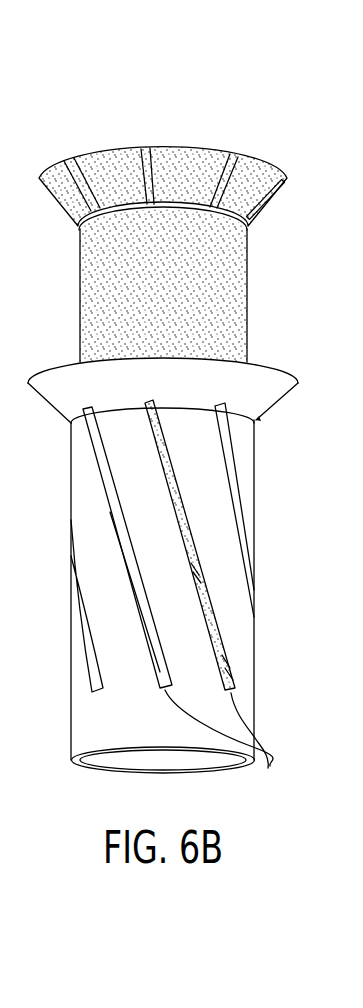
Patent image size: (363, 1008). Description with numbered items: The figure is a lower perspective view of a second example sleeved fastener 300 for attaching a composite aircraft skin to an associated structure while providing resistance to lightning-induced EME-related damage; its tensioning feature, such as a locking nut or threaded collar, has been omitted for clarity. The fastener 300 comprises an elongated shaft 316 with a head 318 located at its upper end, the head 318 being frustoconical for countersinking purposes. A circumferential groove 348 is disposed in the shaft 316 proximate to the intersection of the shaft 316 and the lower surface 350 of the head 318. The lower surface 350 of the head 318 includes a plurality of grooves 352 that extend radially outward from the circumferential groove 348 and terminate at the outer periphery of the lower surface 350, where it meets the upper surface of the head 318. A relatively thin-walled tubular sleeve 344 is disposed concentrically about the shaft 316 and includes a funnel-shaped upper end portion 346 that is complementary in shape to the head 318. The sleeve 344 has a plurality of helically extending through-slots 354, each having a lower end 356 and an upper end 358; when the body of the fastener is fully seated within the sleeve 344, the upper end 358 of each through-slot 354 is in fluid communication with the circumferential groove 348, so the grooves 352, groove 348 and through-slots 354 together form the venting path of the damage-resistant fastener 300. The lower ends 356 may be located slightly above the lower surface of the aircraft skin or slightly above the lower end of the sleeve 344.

The sleeved fastener 300 is at (246, 105).
The head 318 is at (186, 147).
The grooves 352 is at (146, 162).
The circumferential groove 348 is at (250, 219).
The lower surface of the head 350 is at (110, 193).
The elongated shaft 316 is at (167, 299).
The funnel-shaped upper end portion 346 is at (272, 372).
The upper end of the through-slot 358 is at (147, 400).
The helically extending through-slots 354 is at (205, 598).
The lower end of the through-slot 356 is at (225, 741).
The tubular sleeve 344 is at (185, 754).